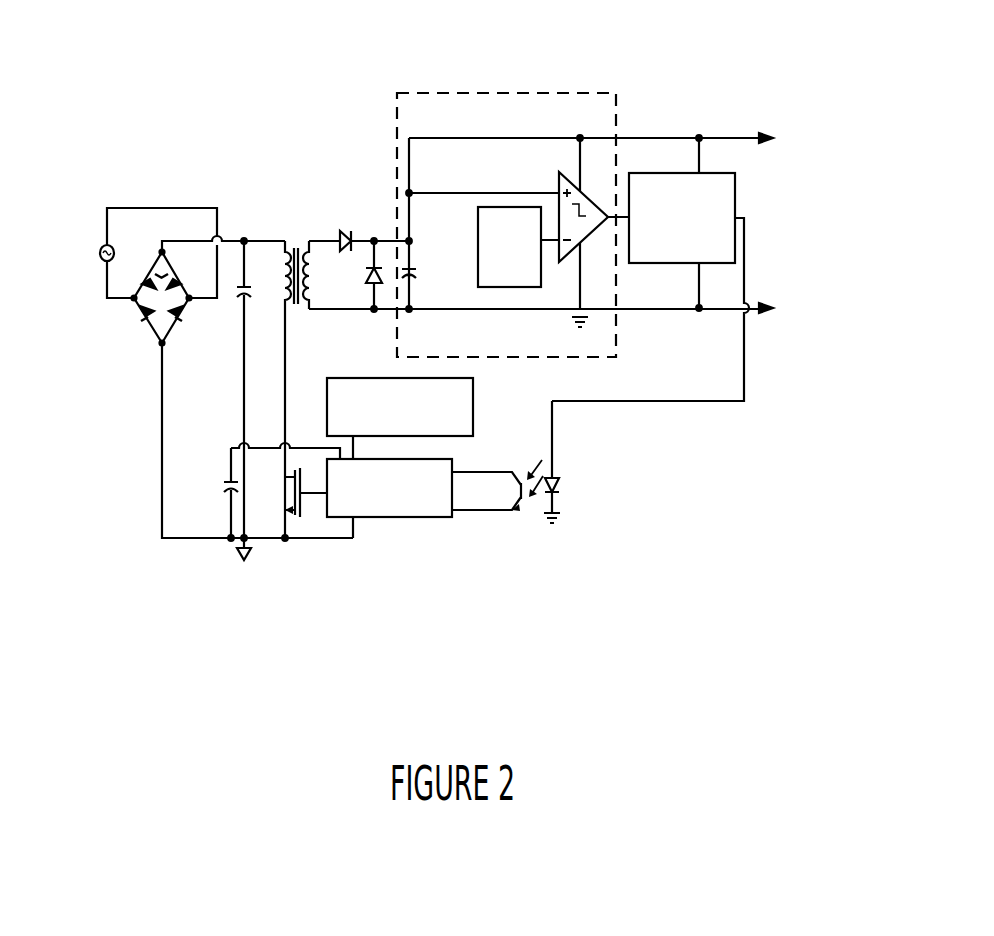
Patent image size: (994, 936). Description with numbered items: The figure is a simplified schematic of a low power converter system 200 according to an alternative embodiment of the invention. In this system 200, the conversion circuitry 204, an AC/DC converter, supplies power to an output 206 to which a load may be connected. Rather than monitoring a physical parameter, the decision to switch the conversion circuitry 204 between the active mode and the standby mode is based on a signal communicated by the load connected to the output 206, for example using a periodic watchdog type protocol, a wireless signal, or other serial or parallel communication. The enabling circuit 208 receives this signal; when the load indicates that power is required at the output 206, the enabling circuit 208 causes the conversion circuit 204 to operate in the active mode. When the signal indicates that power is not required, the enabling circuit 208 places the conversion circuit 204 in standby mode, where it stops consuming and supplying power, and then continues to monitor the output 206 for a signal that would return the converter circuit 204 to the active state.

The system 200 is at (438, 349).
The conversion circuitry 204 is at (296, 135).
The output 206 is at (680, 269).
The enabling circuit 208 is at (513, 93).